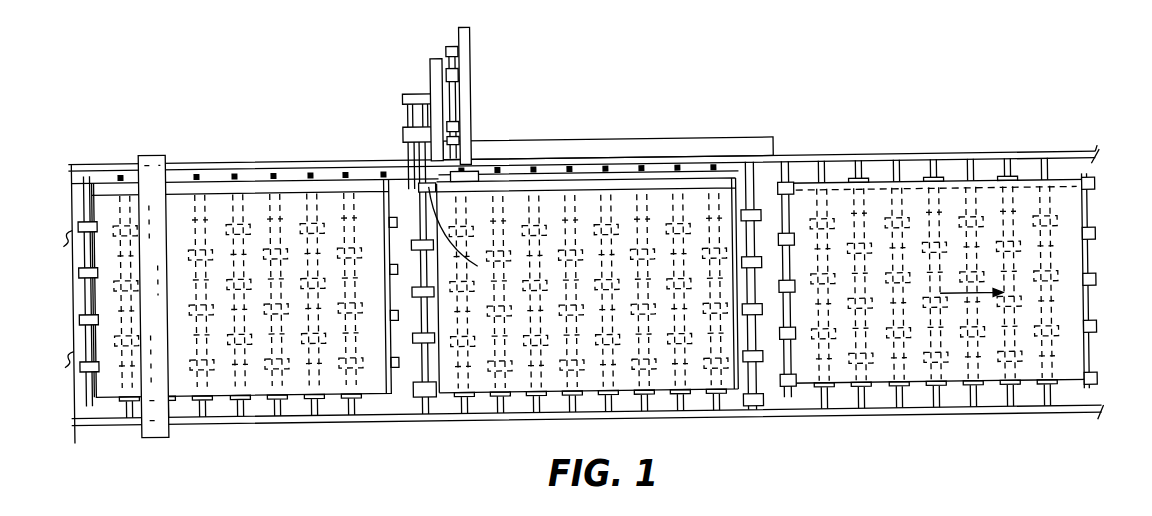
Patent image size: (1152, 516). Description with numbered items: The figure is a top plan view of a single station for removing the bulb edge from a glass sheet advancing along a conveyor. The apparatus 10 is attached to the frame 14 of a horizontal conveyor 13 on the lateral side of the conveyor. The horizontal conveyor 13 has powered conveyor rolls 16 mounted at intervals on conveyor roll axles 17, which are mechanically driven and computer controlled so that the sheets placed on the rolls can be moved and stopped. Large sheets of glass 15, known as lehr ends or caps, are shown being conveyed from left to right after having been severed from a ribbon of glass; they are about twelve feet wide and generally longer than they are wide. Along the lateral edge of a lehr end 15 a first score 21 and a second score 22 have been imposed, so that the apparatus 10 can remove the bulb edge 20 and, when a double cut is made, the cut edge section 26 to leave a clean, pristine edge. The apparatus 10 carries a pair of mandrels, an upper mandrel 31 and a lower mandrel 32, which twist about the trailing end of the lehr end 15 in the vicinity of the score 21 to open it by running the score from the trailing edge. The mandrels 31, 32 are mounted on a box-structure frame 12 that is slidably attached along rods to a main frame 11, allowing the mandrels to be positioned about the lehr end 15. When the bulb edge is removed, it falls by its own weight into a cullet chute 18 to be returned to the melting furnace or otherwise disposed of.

The apparatus 10 is at (373, 97).
The main frame 11 is at (474, 27).
The frame 12 is at (436, 52).
The horizontal conveyor 13 is at (763, 177).
The frame 14 is at (886, 159).
The glass sheet 15 is at (1070, 275).
The conveyor rolls 16 is at (427, 388).
The conveyor roll axles 17 is at (425, 396).
The cullet chute 18 is at (643, 139).
The bulb edge 20 is at (222, 181).
The first score 21 is at (112, 172).
The second score 22 is at (129, 172).
The cut edge section 26 is at (255, 186).
The upper mandrel 31 is at (466, 169).
The lower mandrel 32 is at (465, 235).